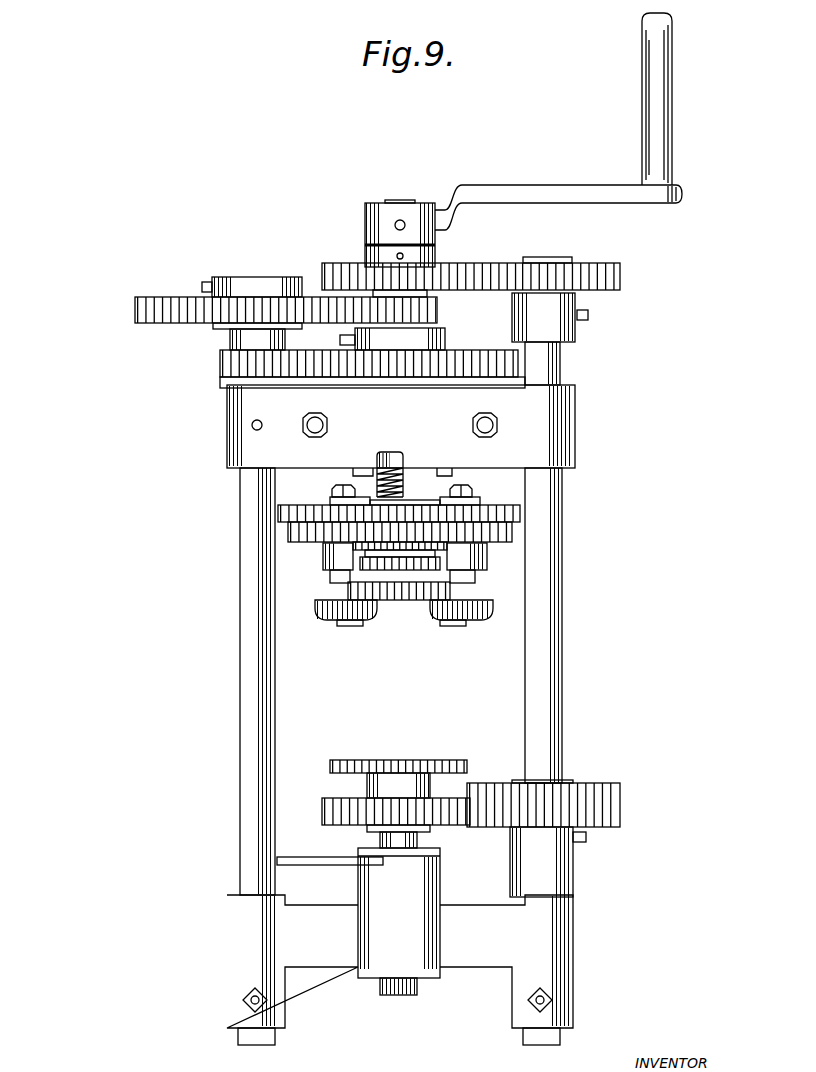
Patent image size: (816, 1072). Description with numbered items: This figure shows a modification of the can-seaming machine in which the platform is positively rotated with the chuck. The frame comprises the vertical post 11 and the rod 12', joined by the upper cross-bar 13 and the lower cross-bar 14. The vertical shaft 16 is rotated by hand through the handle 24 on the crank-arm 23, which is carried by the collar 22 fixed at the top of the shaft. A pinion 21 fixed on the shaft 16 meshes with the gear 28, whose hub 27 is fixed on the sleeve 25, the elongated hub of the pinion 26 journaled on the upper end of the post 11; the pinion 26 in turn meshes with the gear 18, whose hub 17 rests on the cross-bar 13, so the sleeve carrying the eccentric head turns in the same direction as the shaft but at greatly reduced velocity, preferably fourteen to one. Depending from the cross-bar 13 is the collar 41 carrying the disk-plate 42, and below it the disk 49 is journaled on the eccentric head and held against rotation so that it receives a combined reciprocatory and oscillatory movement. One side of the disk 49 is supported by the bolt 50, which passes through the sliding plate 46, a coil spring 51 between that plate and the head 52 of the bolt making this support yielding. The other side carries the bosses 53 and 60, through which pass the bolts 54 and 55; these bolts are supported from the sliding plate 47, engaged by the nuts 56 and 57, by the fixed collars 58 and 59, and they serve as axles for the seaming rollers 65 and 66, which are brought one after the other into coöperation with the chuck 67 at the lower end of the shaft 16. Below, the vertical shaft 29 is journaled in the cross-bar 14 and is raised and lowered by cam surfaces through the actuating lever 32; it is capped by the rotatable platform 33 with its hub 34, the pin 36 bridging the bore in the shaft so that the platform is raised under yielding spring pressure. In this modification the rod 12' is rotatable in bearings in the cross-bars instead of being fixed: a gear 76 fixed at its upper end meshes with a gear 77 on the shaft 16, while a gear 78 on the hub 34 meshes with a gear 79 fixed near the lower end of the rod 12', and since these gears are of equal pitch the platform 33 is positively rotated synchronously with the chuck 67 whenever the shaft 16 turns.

The vertical rod or post 11 is at (248, 498).
The rod 12' is at (562, 595).
The upper cross-bar 13 is at (535, 438).
The lower cross-bar 14 is at (520, 932).
The vertical shaft 16 is at (408, 200).
The hub of the gear 17 is at (445, 340).
The gear 18 is at (413, 370).
The pinion 21 is at (437, 313).
The collar 22 is at (368, 213).
The crank-arm 23 is at (563, 183).
The handle 24 is at (672, 70).
The sleeve 25 is at (230, 339).
The pinion 26 is at (220, 364).
The hub of a gear 27 is at (280, 278).
The gear 28 is at (135, 309).
The vertical shaft 29 is at (380, 986).
The actuating lever 32 is at (305, 865).
The rotatable platform 33 is at (448, 760).
The hub 34 is at (368, 794).
The pin 36 is at (368, 837).
The collar 41 is at (478, 497).
The disk-plate 42 is at (290, 505).
The sliding plate 46 is at (390, 505).
The sliding plate 47 is at (328, 497).
The disk 49 is at (290, 535).
The bolt 50 is at (378, 462).
The coil spring 51 is at (410, 478).
The head of the bolt 52 is at (395, 455).
The boss 53 is at (325, 554).
The bolt 54 is at (348, 623).
The bolt 55 is at (455, 623).
The nut 56 is at (340, 484).
The nut 57 is at (472, 492).
The fixed collar 58 is at (330, 577).
The fixed collar 59 is at (475, 578).
The boss 60 is at (480, 556).
The seaming roller 65 is at (318, 610).
The seaming roller 66 is at (490, 610).
The chuck 67 is at (403, 601).
The gear 76 is at (620, 277).
The gear 77 is at (445, 278).
The gear 78 is at (322, 818).
The gear 79 is at (620, 800).